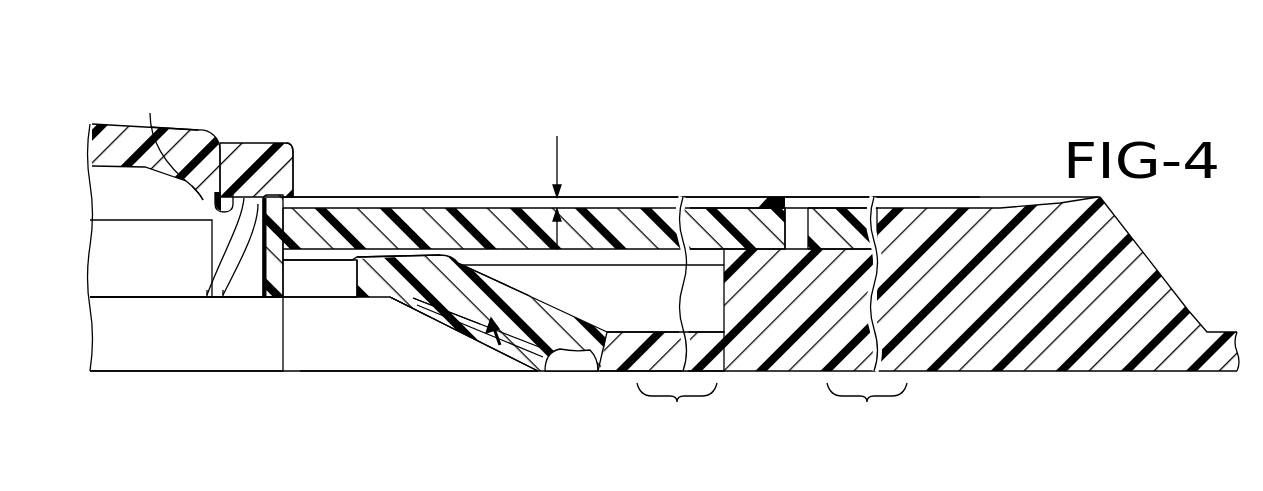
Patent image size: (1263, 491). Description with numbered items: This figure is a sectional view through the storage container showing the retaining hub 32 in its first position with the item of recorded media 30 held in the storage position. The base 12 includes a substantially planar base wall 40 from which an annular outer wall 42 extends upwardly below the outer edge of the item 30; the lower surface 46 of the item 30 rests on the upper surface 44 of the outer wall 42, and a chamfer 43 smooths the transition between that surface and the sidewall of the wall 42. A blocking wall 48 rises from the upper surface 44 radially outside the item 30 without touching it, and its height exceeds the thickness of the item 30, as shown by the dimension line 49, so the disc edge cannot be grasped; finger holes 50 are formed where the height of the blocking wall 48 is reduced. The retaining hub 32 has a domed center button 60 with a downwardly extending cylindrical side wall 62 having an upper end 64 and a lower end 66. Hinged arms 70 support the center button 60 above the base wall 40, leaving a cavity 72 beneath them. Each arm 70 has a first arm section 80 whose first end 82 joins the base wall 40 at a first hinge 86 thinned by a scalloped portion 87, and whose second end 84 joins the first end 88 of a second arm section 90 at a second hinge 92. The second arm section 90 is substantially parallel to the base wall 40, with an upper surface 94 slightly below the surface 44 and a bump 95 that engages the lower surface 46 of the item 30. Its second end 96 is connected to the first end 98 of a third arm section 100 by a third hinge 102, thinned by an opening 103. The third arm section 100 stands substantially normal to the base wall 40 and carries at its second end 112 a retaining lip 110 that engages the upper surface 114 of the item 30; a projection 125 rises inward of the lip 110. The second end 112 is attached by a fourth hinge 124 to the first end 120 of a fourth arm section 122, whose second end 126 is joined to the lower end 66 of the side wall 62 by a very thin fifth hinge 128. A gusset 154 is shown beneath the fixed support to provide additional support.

The base 12 is at (1013, 371).
The item of recorded media 30 is at (627, 201).
The retaining hub 32 is at (232, 88).
The base wall 40 is at (637, 340).
The annular outer wall 42 is at (773, 303).
The chamfer 43 is at (728, 247).
The upper surface 44 is at (797, 247).
The lower surface 46 is at (632, 265).
The blocking wall 48 is at (827, 230).
The dimension line 49 is at (556, 136).
The finger holes 50 is at (917, 210).
The center button 60 is at (118, 122).
The side wall 62 is at (185, 151).
The upper end 64 is at (213, 130).
The lower end 66 is at (205, 195).
The hinged arm 70 is at (484, 280).
The cavity 72 is at (168, 334).
The first arm section 80 is at (497, 345).
The first end 82 is at (533, 360).
The second end 84 is at (430, 315).
The first hinge 86 is at (603, 350).
The scalloped portion 87 is at (590, 362).
The first end 88 is at (425, 280).
The second arm section 90 is at (378, 282).
The second hinge 92 is at (452, 285).
The upper surface 94 is at (403, 257).
The bump 95 is at (390, 248).
The second end 96 is at (268, 296).
The first end 98 is at (223, 298).
The third arm section 100 is at (275, 228).
The third hinge 102 is at (242, 298).
The opening 103 is at (348, 258).
The retaining lip 110 is at (292, 198).
The second end 112 is at (295, 180).
The upper surface 114 is at (597, 207).
The first end 120 is at (238, 140).
The fourth arm section 122 is at (213, 296).
The fourth hinge 124 is at (287, 150).
The projection 125 is at (263, 142).
The second end 126 is at (220, 273).
The fifth hinge 128 is at (213, 240).
The gusset 154 is at (310, 350).